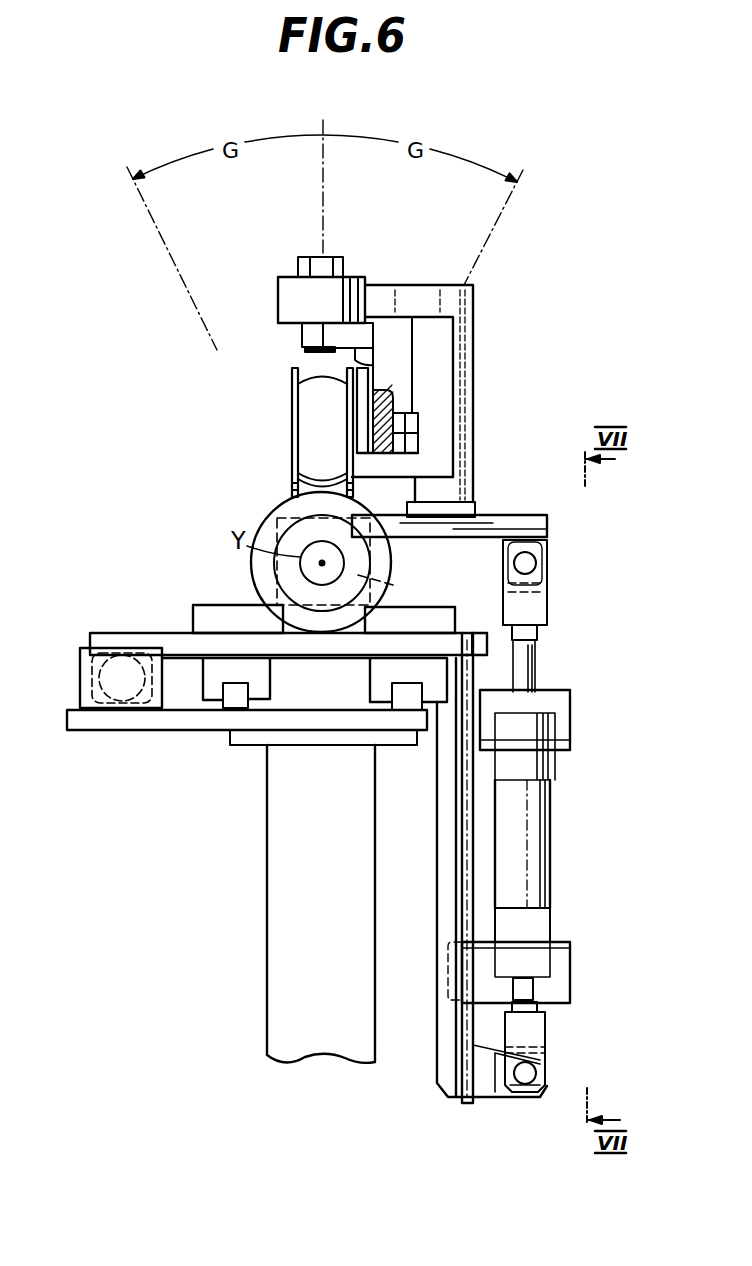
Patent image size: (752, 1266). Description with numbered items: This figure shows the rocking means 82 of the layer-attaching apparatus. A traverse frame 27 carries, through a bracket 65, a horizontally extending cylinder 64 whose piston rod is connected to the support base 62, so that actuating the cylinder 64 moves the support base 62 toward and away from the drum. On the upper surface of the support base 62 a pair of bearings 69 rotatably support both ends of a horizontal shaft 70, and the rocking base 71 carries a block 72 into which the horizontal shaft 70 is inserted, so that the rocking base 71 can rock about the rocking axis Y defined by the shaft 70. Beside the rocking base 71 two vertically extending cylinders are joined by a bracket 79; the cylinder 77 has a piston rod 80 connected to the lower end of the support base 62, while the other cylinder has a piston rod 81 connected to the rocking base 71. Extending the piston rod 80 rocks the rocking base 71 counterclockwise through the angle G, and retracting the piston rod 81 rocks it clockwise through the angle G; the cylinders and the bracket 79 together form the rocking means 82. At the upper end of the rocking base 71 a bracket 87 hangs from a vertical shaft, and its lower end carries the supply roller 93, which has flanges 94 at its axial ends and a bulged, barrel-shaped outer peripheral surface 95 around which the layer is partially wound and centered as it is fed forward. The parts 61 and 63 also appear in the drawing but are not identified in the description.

The traverse frame 27 is at (280, 875).
The guide blocks 61 is at (231, 706).
The support base 62 is at (168, 633).
The slide frame 63 is at (270, 690).
The cylinder 64 is at (82, 688).
The bracket 65 is at (82, 656).
The bearings 69 is at (255, 571).
The horizontal shaft 70 is at (320, 561).
The rocking base 71 is at (503, 515).
The block 72 is at (390, 586).
The cylinder 77 is at (539, 848).
The bracket 79 is at (570, 701).
The piston rod 80 is at (540, 1007).
The piston rod 81 is at (535, 666).
The rocking means 82 is at (555, 799).
The bracket 87 is at (302, 336).
The supply roller 93 is at (292, 421).
The flanges 94 is at (292, 381).
The outer peripheral surface 95 is at (318, 381).